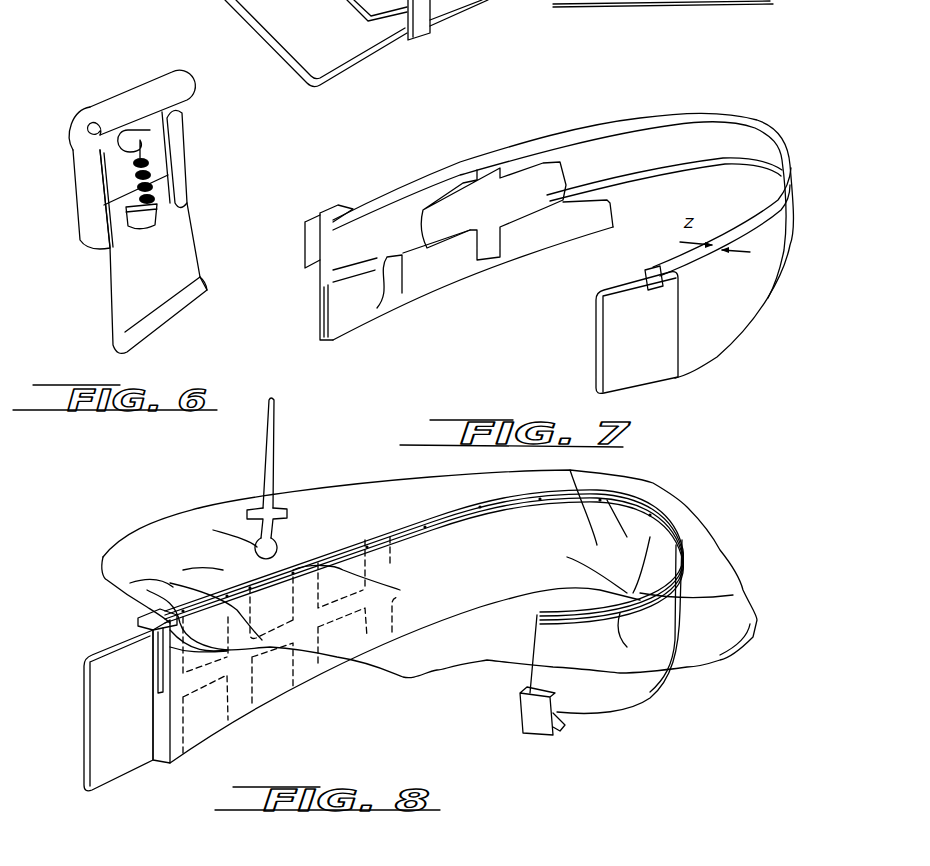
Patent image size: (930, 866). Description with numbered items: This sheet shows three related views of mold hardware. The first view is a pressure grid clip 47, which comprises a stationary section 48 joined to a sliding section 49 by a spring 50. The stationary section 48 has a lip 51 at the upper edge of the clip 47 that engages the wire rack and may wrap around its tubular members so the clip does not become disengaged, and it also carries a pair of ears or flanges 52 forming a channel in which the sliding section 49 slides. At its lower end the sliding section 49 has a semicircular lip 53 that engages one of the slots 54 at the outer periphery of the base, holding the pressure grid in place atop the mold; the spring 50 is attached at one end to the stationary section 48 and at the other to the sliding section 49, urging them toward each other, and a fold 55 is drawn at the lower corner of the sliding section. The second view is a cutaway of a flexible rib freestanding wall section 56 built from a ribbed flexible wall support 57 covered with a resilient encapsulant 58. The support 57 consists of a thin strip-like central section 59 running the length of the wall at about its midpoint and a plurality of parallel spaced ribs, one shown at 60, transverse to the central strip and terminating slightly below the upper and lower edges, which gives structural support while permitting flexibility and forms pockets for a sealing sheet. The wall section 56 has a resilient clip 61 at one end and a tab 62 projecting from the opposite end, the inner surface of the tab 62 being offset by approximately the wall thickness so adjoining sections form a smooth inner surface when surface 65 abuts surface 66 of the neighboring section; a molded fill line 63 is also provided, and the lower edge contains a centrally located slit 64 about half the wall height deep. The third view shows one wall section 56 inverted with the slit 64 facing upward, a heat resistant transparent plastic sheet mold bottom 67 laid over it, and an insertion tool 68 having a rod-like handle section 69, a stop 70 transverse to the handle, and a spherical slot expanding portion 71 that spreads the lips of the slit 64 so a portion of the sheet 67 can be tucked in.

In FIG. 6, the pressure grid clip 47 is at (135, 94).
In FIG. 7, the pressure grid clip 47 is at (418, 40).
In FIG. 6, the stationary section 48 is at (84, 131).
In FIG. 6, the sliding section 49 is at (117, 267).
In FIG. 6, the spring 50 is at (150, 170).
In FIG. 6, the lip 51 is at (180, 80).
In FIG. 6, the ears or flanges 52 is at (183, 128).
In FIG. 6, the semicircular lip 53 is at (173, 320).
In FIG. 7, the slots 54 is at (400, 42).
In FIG. 6, the flange fold 55 is at (180, 283).
In FIG. 7, the flexible rib freestanding wall section 56 is at (636, 78).
In FIG. 8, the flexible rib freestanding wall section 56 is at (626, 708).
In FIG. 7, the ribbed flexible wall support 57 is at (467, 210).
In FIG. 7, the resilient encapsulant 58 is at (720, 132).
In FIG. 7, the central section 59 is at (513, 207).
In FIG. 7, the rib 60 is at (483, 258).
In FIG. 7, the resilient clip 61 is at (313, 227).
In FIG. 7, the tab 62 is at (650, 382).
In FIG. 7, the molded fill line 63 is at (760, 163).
In FIG. 7, the slit 64 is at (320, 327).
In FIG. 7, the surface 65 is at (330, 277).
In FIG. 7, the surface 66 is at (643, 272).
In FIG. 8, the heat resistant transparent plastic sheet mold bottom 67 is at (713, 650).
In FIG. 8, the insertion tool 68 is at (276, 452).
In FIG. 8, the rod-like handle section 69 is at (266, 428).
In FIG. 8, the stop 70 is at (288, 514).
In FIG. 8, the slot expanding portion 71 is at (253, 550).